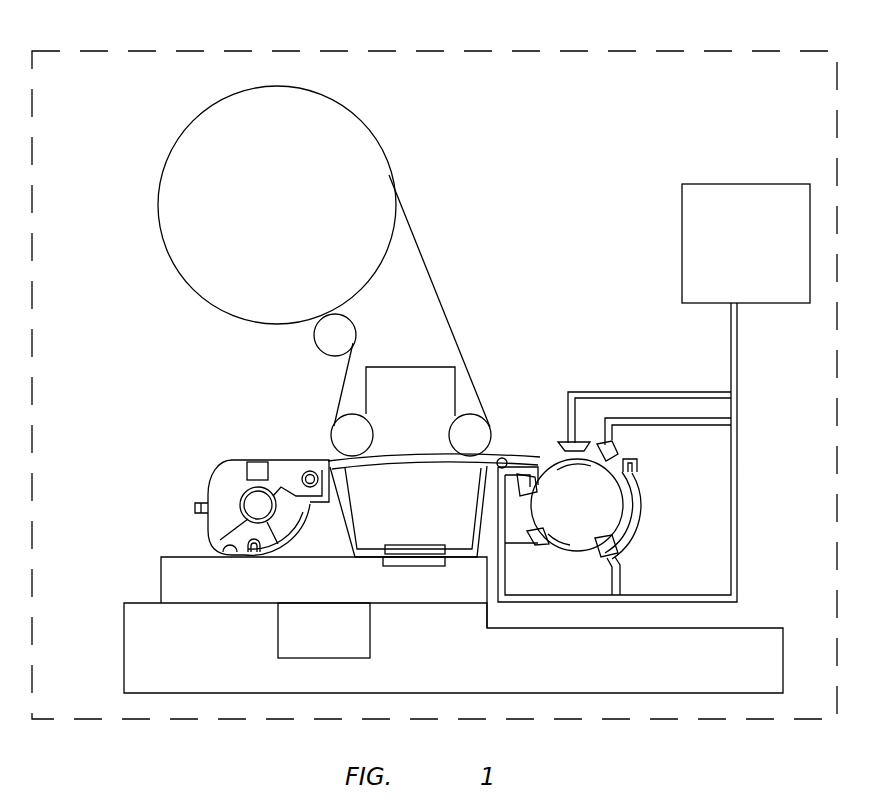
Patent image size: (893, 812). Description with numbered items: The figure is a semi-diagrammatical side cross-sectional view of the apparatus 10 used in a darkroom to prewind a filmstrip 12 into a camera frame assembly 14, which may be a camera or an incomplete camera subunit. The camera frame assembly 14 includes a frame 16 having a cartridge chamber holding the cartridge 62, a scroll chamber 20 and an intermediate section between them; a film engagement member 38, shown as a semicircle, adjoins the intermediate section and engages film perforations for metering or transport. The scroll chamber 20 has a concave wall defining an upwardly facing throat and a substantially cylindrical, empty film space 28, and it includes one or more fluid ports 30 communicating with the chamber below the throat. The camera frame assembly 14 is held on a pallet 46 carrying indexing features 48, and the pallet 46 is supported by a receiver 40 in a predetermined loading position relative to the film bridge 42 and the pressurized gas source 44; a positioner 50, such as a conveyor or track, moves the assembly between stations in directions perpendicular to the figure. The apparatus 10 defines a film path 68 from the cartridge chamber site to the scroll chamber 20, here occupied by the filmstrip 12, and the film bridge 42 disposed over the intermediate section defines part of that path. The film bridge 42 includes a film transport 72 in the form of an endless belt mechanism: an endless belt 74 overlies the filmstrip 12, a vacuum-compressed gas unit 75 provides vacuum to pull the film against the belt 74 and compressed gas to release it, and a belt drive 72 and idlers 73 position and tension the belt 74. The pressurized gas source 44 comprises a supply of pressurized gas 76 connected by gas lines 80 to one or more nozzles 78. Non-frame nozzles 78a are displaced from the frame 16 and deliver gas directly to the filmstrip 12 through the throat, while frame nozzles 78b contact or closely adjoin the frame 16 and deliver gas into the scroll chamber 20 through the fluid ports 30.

The apparatus 10 is at (318, 51).
The film transport 72 is at (345, 111).
The film bridge 42 is at (412, 203).
The endless belt 74 is at (426, 268).
The idlers 73 is at (335, 425).
The vacuum-compressed gas unit 75 is at (413, 367).
The pressurized gas source 44 is at (724, 195).
The supply of pressurized gas 76 is at (753, 184).
The filmstrip 12 is at (468, 390).
The film path 68 is at (534, 460).
The film engagement member 38 is at (501, 458).
The frame 16 is at (352, 511).
The indexing features 48 is at (447, 566).
The pallet 46 is at (161, 570).
The receiver 40 is at (128, 620).
The positioner 50 is at (334, 641).
The camera frame assembly 14 is at (207, 523).
The cartridge 62 is at (231, 461).
The scroll chamber 20 is at (627, 487).
The fluid ports 30 is at (543, 478).
The gas lines 80 is at (737, 442).
The film space 28 is at (623, 456).
The nozzles 78 is at (544, 540).
The non-frame nozzles 78a is at (578, 442).
The frame nozzles 78b is at (623, 532).